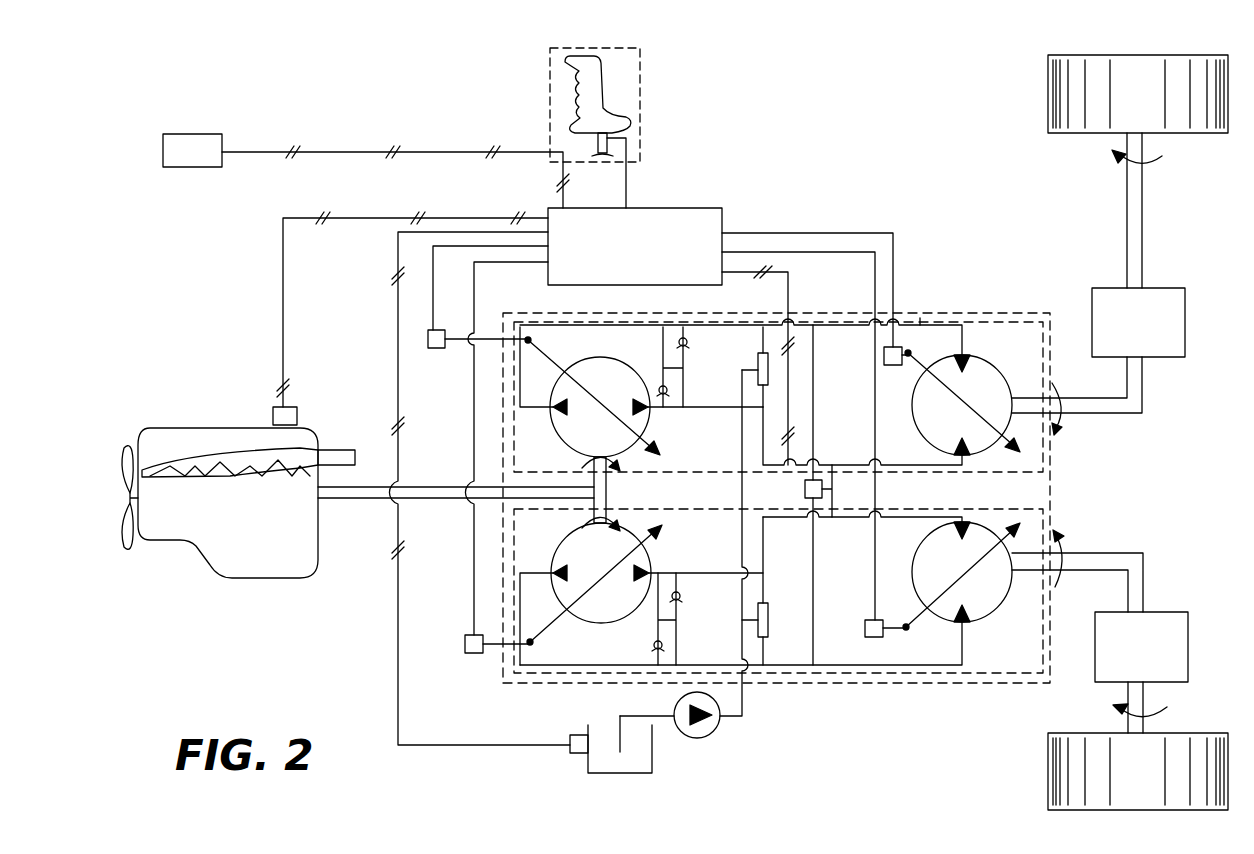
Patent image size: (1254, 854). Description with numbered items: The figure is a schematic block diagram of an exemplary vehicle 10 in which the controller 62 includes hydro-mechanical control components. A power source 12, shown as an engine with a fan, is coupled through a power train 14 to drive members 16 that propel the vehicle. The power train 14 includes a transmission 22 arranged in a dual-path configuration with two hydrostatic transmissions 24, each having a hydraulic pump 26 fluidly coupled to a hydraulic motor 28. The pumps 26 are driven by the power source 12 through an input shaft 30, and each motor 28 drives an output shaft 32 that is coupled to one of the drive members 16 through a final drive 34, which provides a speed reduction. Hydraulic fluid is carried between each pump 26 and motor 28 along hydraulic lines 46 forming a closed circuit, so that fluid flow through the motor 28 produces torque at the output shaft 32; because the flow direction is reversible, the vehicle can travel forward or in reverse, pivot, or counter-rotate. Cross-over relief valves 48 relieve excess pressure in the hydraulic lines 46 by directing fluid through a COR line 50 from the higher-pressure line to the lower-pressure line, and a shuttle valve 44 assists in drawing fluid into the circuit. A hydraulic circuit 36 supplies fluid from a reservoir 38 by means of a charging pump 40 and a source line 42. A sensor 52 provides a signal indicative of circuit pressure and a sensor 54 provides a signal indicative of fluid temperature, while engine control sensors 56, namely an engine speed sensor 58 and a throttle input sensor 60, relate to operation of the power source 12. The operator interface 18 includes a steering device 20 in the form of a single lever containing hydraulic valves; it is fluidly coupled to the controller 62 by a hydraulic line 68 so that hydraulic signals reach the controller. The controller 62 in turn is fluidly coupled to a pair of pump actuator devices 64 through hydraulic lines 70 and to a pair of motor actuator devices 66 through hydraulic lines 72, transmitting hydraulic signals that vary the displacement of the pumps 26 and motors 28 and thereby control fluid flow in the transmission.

The vehicle 10 is at (243, 82).
The power source 12 is at (207, 533).
The power train 14 is at (824, 105).
The drive members 16 is at (1048, 90).
The operator interface 18 is at (550, 80).
The steering device 20 is at (610, 82).
The transmission 22 is at (1044, 310).
The hydrostatic transmission 24 is at (984, 318).
The hydraulic pump 26 is at (641, 496).
The hydraulic motor 28 is at (963, 490).
The input shaft 30 is at (348, 502).
The output shaft 32 is at (1090, 413).
The final drive 34 is at (1140, 485).
The hydraulic circuit 36 is at (765, 722).
The reservoir 38 is at (652, 745).
The charging pump 40 is at (708, 733).
The source line 42 is at (618, 733).
The shuttle valve 44 is at (752, 366).
The hydraulic lines 46 is at (922, 324).
The cross-over relief valves 48 is at (688, 346).
The COR line 50 is at (663, 366).
The sensor 52 is at (805, 490).
The sensor 54 is at (578, 755).
The engine control sensors 56 is at (186, 183).
The engine speed sensor 58 is at (297, 415).
The throttle input sensor 60 is at (164, 152).
The controller 62 is at (680, 215).
The pump actuator devices 64 is at (437, 348).
The motor actuator devices 66 is at (893, 365).
The hydraulic line 68 is at (627, 186).
The hydraulic lines 70 is at (469, 313).
The hydraulic lines 72 is at (838, 232).